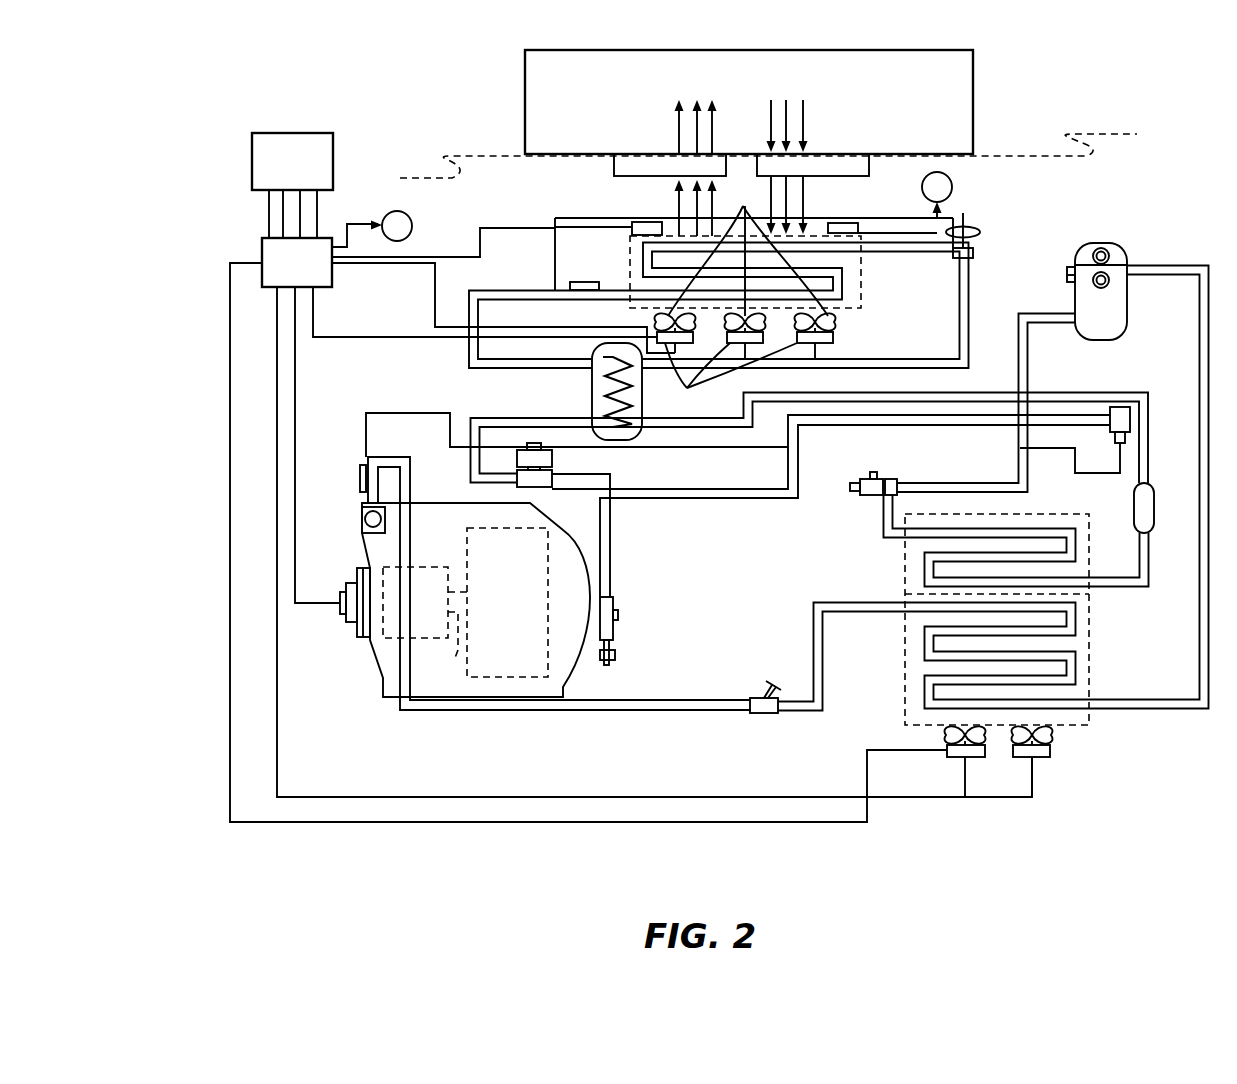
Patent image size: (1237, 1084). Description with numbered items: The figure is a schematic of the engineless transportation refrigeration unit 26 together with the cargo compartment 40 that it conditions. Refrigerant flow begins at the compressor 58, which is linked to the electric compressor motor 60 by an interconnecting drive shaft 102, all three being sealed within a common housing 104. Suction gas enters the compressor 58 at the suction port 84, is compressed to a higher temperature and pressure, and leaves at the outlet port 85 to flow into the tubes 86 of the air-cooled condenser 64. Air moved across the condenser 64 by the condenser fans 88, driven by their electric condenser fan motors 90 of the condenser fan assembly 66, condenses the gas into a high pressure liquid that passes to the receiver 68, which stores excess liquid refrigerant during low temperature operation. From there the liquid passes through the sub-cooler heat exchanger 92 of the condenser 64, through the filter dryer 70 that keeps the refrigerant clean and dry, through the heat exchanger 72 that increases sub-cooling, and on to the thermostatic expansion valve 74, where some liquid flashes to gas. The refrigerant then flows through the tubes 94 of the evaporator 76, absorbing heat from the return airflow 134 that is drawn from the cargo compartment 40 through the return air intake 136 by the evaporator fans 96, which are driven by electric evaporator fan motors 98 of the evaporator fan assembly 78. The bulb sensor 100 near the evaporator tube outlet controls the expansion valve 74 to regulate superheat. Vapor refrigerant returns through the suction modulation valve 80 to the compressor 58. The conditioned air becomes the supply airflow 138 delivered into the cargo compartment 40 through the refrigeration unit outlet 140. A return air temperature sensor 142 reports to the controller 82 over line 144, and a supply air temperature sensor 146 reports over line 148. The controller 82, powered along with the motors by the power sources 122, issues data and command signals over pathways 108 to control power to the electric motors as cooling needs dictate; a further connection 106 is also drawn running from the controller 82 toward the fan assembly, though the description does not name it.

The engineless transportation refrigeration unit 26 is at (1138, 146).
The cargo compartment 40 is at (787, 87).
The compressor 58 is at (494, 618).
The electric compressor motor 60 is at (412, 618).
The condenser 64 is at (1097, 608).
The condenser fan assembly 66 is at (989, 773).
The receiver 68 is at (1127, 300).
The filter dryer 70 is at (1156, 506).
The heat exchanger 72 is at (590, 384).
The expansion valve 74 is at (980, 241).
The evaporator 76 is at (862, 272).
The evaporator fan assembly 78 is at (893, 339).
The suction modulation valve 80 is at (546, 490).
The controller 82 is at (285, 277).
The suction port 84 is at (620, 610).
The outlet port 85 is at (361, 510).
The tubes 86 is at (1077, 667).
The condenser fans 88 is at (940, 733).
The condenser fan motors 90 is at (953, 758).
The sub-cooler heat exchanger 92 is at (905, 570).
The tubes 94 is at (650, 262).
The evaporator fans 96 is at (748, 244).
The evaporator fan motors 98 is at (745, 366).
The thermostatic expansion valve bulb sensor 100 is at (587, 281).
The interconnecting drive shaft 102 is at (456, 649).
The common housing 104 is at (496, 712).
The control wiring 106 is at (297, 383).
The pathways 108 is at (229, 413).
The power sources 122 is at (275, 173).
The return airflow 134 is at (815, 195).
The return air intake 136 is at (871, 166).
The supply airflow 138 is at (677, 226).
The refrigeration unit outlet 140 is at (612, 167).
The return air temperature sensor 142 is at (863, 224).
The line 144 is at (354, 221).
The supply air temperature sensor 146 is at (640, 221).
The line 148 is at (478, 257).